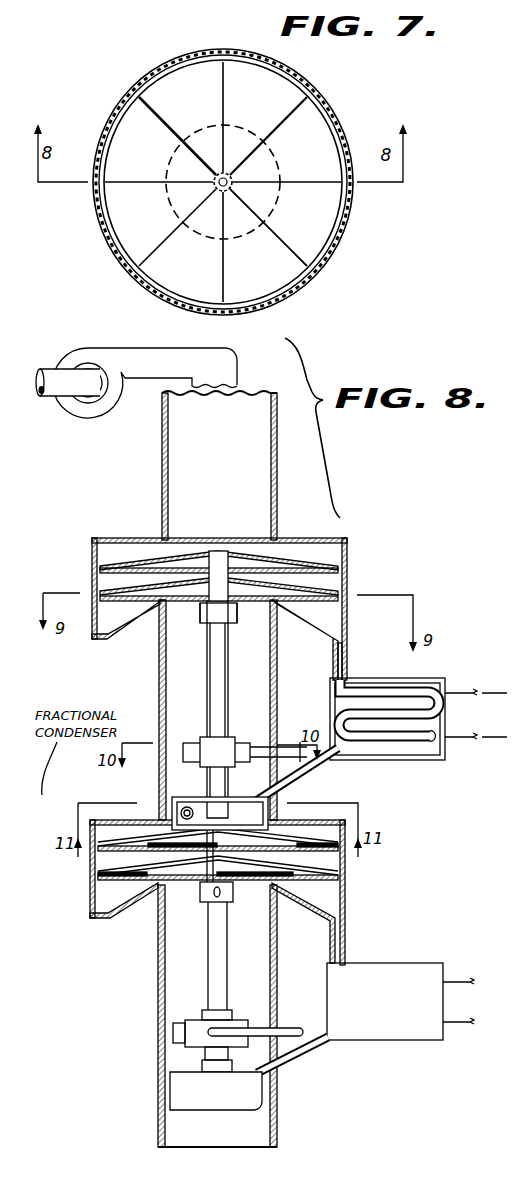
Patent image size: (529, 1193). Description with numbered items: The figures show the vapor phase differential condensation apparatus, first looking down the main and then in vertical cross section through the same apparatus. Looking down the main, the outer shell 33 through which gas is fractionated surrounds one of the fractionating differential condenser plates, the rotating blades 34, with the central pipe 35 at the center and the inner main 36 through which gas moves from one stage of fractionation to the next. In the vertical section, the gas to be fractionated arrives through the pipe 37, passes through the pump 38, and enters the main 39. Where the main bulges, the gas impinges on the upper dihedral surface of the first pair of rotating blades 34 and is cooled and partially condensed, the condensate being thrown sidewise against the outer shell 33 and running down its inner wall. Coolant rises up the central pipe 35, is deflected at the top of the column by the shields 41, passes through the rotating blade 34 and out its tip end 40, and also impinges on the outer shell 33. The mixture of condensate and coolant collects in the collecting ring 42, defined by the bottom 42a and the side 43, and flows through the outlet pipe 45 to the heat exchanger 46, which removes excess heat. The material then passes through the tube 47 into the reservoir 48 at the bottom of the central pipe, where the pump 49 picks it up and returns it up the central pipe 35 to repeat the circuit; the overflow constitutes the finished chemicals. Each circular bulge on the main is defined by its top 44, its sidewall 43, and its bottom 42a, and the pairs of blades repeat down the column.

In FIG. 7, the outer shell of the main 33 is at (280, 168).
In FIG. 8, the outer shell of the main 33 is at (340, 570).
In FIG. 7, the rotating blades 34 is at (273, 253).
In FIG. 8, the rotating blades 34 is at (317, 562).
In FIG. 7, the central pipe 35 is at (231, 187).
In FIG. 8, the central pipe 35 is at (227, 660).
In FIG. 7, the inner main 36 is at (228, 185).
In FIG. 8, the pipe 37 is at (52, 398).
In FIG. 8, the pump 38 is at (87, 373).
In FIG. 8, the main 39 is at (277, 477).
In FIG. 8, the tip end 40 is at (340, 592).
In FIG. 8, the shields 41 is at (240, 585).
In FIG. 8, the collecting ring 42 is at (160, 610).
In FIG. 8, the bottom 42a is at (120, 633).
In FIG. 8, the side 43 is at (92, 633).
In FIG. 8, the top 44 is at (110, 540).
In FIG. 8, the outlet pipe 45 is at (347, 665).
In FIG. 8, the heat exchanger 46 is at (445, 688).
In FIG. 8, the return tube 47 is at (302, 780).
In FIG. 8, the reservoir 48 is at (207, 813).
In FIG. 8, the pump 49 is at (181, 812).